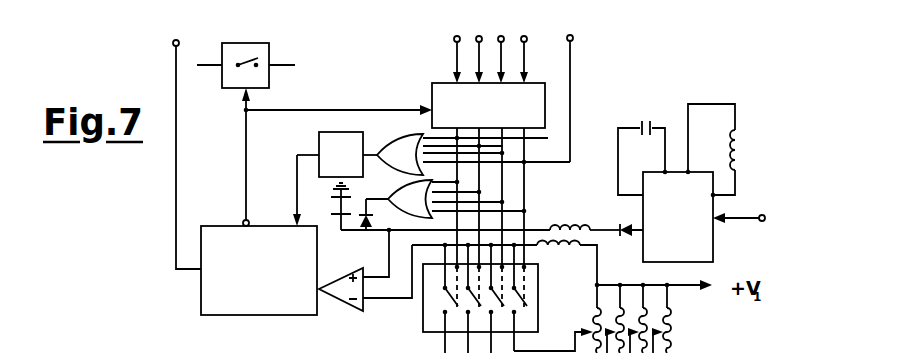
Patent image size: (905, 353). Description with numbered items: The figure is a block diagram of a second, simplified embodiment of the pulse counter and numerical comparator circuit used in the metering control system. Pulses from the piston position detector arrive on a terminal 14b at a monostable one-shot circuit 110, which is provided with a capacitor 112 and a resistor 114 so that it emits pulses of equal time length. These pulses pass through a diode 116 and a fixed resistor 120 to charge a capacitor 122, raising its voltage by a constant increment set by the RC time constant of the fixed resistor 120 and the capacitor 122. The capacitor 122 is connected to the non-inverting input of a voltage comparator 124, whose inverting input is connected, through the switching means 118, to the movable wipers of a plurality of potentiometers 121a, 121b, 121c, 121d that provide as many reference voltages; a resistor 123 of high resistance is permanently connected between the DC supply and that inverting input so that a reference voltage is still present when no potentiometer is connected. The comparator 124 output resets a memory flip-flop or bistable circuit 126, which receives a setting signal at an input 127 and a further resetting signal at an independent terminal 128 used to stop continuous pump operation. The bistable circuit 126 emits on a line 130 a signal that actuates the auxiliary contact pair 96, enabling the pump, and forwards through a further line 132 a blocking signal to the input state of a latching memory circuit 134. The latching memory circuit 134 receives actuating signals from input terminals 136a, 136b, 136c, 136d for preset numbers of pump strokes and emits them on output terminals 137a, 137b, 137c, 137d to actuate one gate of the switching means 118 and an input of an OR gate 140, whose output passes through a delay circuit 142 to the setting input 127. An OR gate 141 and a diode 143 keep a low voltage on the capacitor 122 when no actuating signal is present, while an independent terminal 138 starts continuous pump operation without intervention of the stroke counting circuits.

The auxiliary contact pair 96 is at (272, 56).
The independent terminal 128 is at (176, 161).
The line 130 is at (246, 160).
The further line 132 is at (333, 108).
The latching memory circuit 134 is at (432, 84).
The input terminal 136a is at (457, 55).
The input terminal 136b is at (479, 50).
The input terminal 136c is at (500, 50).
The input terminal 136d is at (525, 47).
The independent terminal 138 is at (572, 62).
The output terminal 137a is at (458, 180).
The output terminal 137b is at (503, 153).
The output terminal 137c is at (503, 146).
The output terminal 137d is at (548, 138).
The OR gate 140 is at (395, 150).
The OR gate 141 is at (390, 198).
The delay circuit 142 is at (320, 143).
The setting or actuating input 127 is at (296, 215).
The diode 143 is at (378, 226).
The capacitor 122 is at (332, 214).
The memory flip-flop or bistable circuit 126 is at (225, 315).
The voltage comparator 124 is at (345, 304).
The switching means 118 is at (423, 320).
The fixed resistor 120 is at (584, 229).
The resistor 123 is at (581, 247).
The diode 116 is at (626, 224).
The monostable one-shot circuit 110 is at (658, 262).
The capacitor 112 is at (648, 133).
The resistor 114 is at (730, 160).
The terminal 14b is at (754, 224).
The potentiometer 121a is at (672, 342).
The potentiometer 121b is at (648, 312).
The potentiometer 121c is at (618, 298).
The potentiometer 121d is at (594, 316).